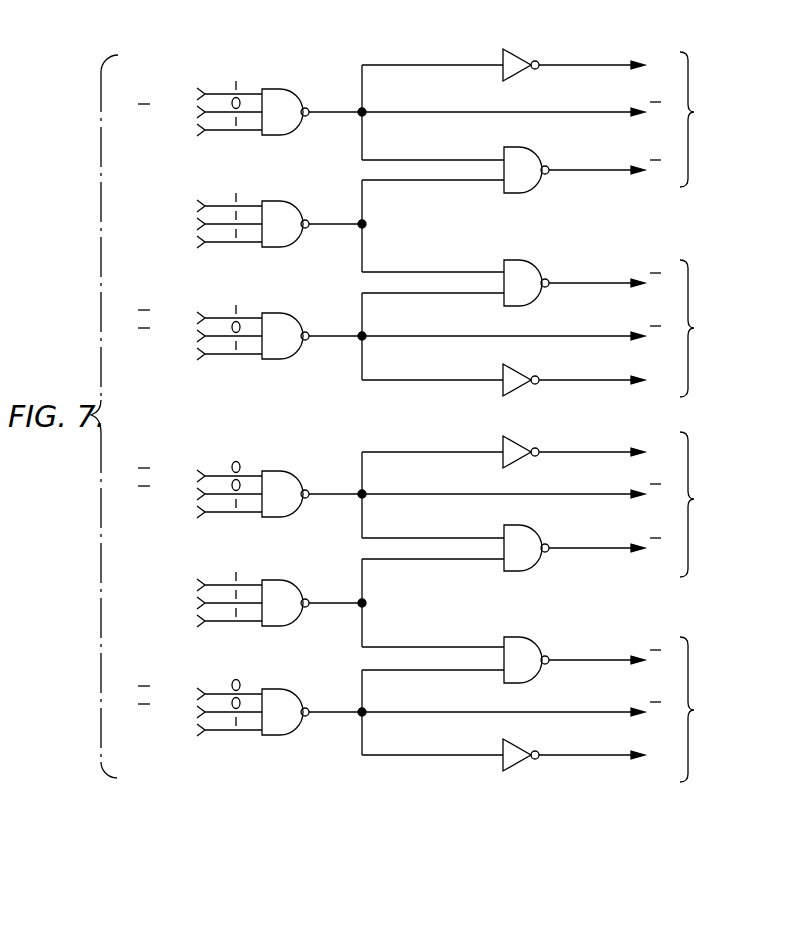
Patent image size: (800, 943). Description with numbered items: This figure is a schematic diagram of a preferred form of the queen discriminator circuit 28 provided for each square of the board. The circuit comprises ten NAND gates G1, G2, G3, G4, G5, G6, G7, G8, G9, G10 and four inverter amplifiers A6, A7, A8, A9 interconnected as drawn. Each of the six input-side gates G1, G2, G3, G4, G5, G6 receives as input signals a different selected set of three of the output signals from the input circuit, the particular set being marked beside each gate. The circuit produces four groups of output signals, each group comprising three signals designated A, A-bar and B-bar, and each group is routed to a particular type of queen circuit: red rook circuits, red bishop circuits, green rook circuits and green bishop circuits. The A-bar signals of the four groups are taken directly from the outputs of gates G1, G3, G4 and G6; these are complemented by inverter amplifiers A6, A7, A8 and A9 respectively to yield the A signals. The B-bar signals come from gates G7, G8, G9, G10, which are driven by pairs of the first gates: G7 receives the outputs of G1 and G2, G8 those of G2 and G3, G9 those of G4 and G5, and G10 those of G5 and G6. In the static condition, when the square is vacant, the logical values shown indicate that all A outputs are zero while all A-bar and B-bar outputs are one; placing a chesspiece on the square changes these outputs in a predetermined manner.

The queen discriminator circuit 28 is at (440, 456).
The NAND gate G1 is at (250, 110).
The NAND gate G2 is at (249, 222).
The NAND gate G3 is at (249, 334).
The NAND gate G4 is at (250, 492).
The NAND gate G5 is at (249, 601).
The NAND gate G6 is at (249, 710).
The NAND gate G7 is at (567, 170).
The NAND gate G8 is at (567, 283).
The NAND gate G9 is at (567, 548).
The NAND gate G10 is at (567, 660).
The inverter amplifier A6 is at (567, 71).
The inverter amplifier A7 is at (567, 373).
The inverter amplifier A8 is at (567, 446).
The inverter amplifier A9 is at (567, 749).